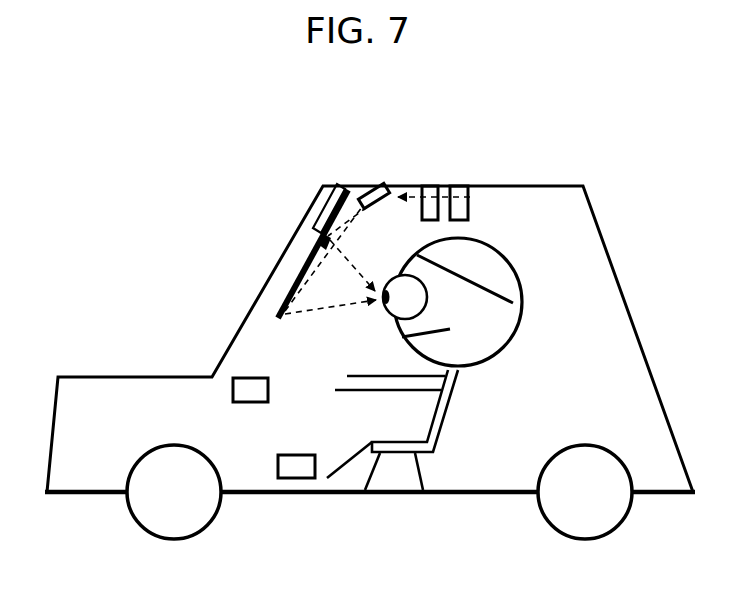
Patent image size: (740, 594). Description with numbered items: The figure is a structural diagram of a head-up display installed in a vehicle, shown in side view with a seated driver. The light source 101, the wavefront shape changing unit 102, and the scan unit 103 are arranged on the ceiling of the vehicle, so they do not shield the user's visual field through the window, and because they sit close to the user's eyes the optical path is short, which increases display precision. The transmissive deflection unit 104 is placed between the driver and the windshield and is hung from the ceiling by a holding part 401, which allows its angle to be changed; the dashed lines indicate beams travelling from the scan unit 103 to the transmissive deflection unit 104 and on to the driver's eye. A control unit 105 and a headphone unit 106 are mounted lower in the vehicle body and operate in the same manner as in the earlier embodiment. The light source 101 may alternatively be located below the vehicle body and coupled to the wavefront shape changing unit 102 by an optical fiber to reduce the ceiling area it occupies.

The light source 101 is at (462, 183).
The wavefront shape changing unit 102 is at (430, 183).
The scan unit 103 is at (368, 188).
The transmissive deflection unit 104 is at (316, 244).
The control unit 105 is at (231, 388).
The headphone unit 106 is at (279, 476).
The holding part 401 is at (328, 198).